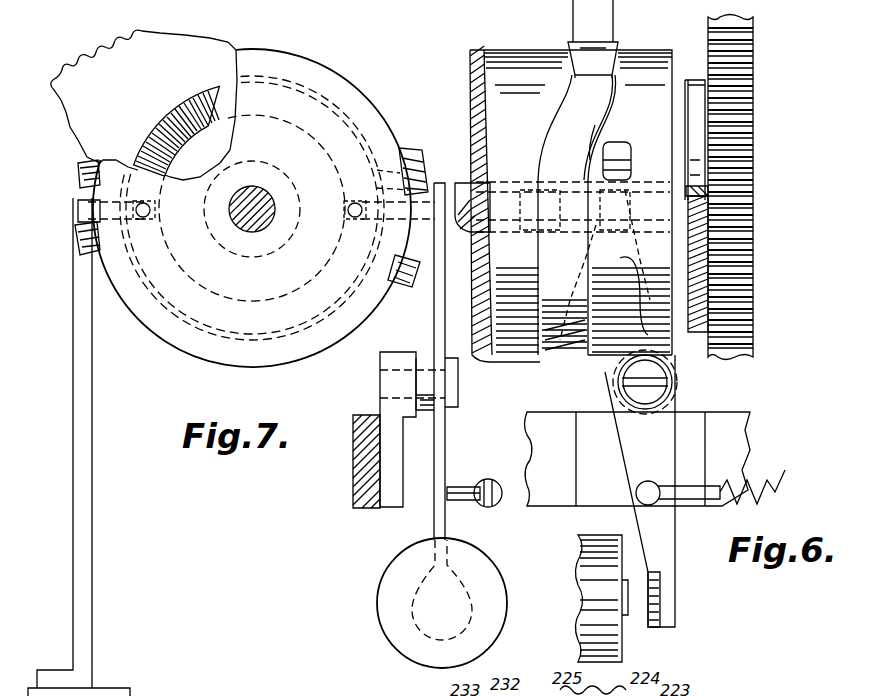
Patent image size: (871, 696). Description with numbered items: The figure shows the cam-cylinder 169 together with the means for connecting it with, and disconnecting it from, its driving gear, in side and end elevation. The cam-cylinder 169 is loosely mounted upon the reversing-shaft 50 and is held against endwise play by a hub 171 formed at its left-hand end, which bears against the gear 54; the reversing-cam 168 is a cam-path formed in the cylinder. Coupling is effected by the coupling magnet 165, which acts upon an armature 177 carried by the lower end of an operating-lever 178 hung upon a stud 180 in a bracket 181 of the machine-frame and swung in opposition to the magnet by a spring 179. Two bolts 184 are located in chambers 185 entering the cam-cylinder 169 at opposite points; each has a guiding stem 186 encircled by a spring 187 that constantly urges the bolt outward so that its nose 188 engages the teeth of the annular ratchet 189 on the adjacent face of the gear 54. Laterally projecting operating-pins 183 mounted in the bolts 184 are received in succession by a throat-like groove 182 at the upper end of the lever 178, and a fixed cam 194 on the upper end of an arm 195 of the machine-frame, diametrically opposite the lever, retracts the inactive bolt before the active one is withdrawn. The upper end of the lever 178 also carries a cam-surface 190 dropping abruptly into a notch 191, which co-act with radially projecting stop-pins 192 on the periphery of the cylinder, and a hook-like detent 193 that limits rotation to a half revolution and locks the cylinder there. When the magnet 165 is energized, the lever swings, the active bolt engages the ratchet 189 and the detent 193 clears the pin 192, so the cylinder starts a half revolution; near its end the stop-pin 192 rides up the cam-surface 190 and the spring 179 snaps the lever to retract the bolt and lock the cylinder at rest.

In FIG. 7, the reversing-gear 54 is at (158, 48).
In FIG. 6, the reversing-gear 54 is at (752, 80).
In FIG. 6, the reversing-shaft 50 is at (480, 240).
In FIG. 7, the coupling magnet 165 is at (507, 590).
In FIG. 6, the coupling magnet 165 is at (622, 648).
In FIG. 6, the reversing-cam 168 is at (580, 337).
In FIG. 6, the cam-cylinder 169 is at (507, 60).
In FIG. 6, the hub 171 is at (686, 120).
In FIG. 6, the armature 177 is at (660, 598).
In FIG. 7, the operating-lever 178 is at (434, 310).
In FIG. 6, the operating-lever 178 is at (662, 554).
In FIG. 7, the spring 179 is at (490, 480).
In FIG. 6, the spring 179 is at (722, 483).
In FIG. 7, the stud 180 is at (400, 372).
In FIG. 6, the stud 180 is at (672, 386).
In FIG. 7, the bracket 181 is at (385, 414).
In FIG. 6, the bracket 181 is at (600, 430).
In FIG. 6, the throat-like groove 182 is at (646, 253).
In FIG. 7, the operating-pins 183 is at (78, 233).
In FIG. 6, the operating-pins 183 is at (646, 185).
In FIG. 7, the bolts 184 is at (160, 243).
In FIG. 6, the bolts 184 is at (592, 282).
In FIG. 7, the chambers 185 is at (152, 203).
In FIG. 6, the chambers 185 is at (535, 215).
In FIG. 7, the guiding stems 186 is at (138, 218).
In FIG. 6, the guiding stems 186 is at (496, 190).
In FIG. 6, the springs 187 is at (575, 218).
In FIG. 6, the noses 188 is at (712, 196).
In FIG. 7, the annular ratchet 189 is at (160, 150).
In FIG. 6, the annular ratchet 189 is at (705, 223).
In FIG. 7, the cam-surface 190 is at (414, 284).
In FIG. 6, the cam-surface 190 is at (642, 298).
In FIG. 7, the notch 191 is at (424, 172).
In FIG. 6, the notch 191 is at (622, 150).
In FIG. 7, the stop-pins 192 is at (80, 258).
In FIG. 6, the stop-pins 192 is at (600, 167).
In FIG. 7, the hook-like detent 193 is at (402, 148).
In FIG. 6, the hook-like detent 193 is at (598, 142).
In FIG. 7, the fixed cam 194 is at (78, 180).
In FIG. 7, the arm 195 is at (88, 392).